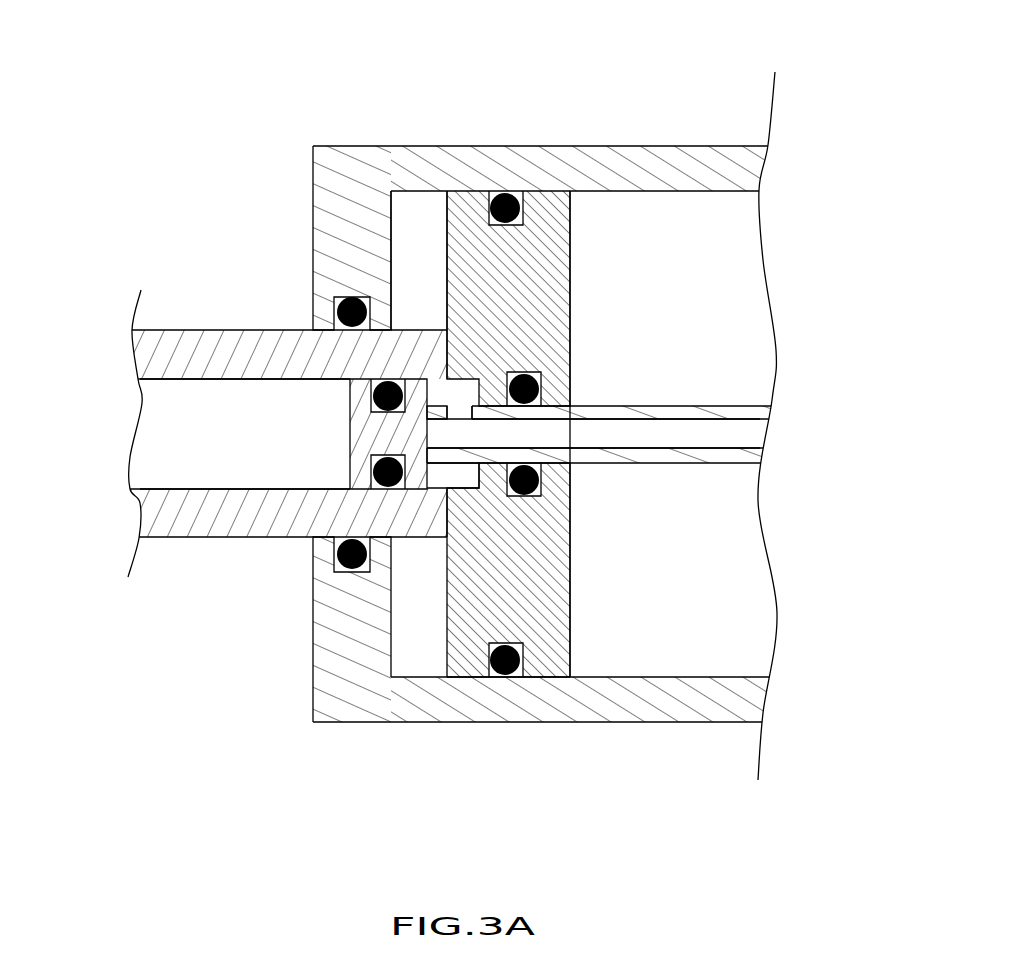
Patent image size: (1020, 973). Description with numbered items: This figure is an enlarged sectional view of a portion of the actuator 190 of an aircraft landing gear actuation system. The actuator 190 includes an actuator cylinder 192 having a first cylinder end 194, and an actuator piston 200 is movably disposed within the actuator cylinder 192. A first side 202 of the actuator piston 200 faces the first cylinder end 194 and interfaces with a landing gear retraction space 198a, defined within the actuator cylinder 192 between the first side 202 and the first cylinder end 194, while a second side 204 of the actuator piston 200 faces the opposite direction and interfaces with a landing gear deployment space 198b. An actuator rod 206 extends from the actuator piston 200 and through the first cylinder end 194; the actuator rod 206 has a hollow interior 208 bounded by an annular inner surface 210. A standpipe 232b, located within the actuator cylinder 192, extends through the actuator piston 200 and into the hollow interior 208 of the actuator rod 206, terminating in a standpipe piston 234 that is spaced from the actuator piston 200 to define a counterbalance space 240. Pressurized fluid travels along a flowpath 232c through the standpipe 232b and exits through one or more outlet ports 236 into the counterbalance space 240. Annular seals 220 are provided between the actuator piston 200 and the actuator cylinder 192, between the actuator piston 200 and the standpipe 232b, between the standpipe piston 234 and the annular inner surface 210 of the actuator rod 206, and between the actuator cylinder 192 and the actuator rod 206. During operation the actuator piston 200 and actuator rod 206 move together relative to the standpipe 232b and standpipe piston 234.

The actuator 190 is at (690, 102).
The actuator cylinder 192 is at (487, 400).
The first cylinder end 194 is at (313, 247).
The landing gear retraction space 198a is at (426, 220).
The landing gear deployment space 198b is at (713, 517).
The actuator piston 200 is at (598, 324).
The first side 202 is at (446, 642).
The second side 204 is at (567, 624).
The actuator rod 206 is at (182, 538).
The hollow interior 208 is at (153, 408).
The annular inner surface 210 is at (163, 488).
The seals 220 is at (518, 210).
The standpipe 232b is at (682, 407).
The flowpath 232c is at (728, 434).
The standpipe piston 234 is at (350, 428).
The outlet ports 236 is at (456, 410).
The counterbalance space 240 is at (456, 474).